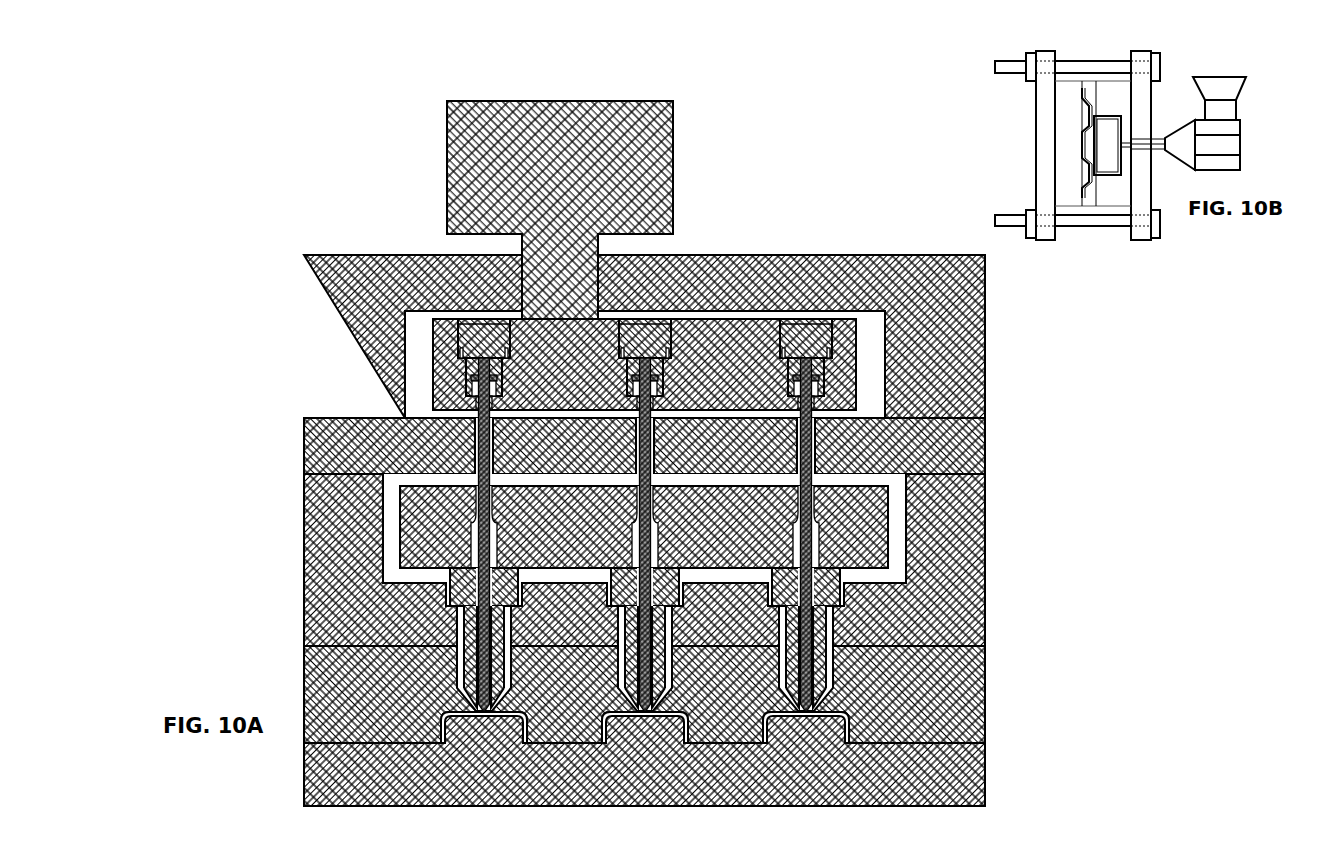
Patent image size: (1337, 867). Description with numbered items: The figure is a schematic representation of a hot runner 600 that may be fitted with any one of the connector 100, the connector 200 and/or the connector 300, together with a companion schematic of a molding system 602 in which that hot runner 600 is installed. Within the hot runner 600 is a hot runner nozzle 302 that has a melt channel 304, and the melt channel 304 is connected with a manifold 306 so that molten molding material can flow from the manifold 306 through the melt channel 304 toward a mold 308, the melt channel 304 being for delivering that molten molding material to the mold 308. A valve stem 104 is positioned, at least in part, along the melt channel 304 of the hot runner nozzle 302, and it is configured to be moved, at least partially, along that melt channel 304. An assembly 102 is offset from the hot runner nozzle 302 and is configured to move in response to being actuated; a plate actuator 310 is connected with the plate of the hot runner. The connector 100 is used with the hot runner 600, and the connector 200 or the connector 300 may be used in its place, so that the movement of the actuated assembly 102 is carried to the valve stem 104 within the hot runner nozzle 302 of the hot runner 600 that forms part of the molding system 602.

In FIG. 10A, the hot runner 600 is at (371, 106).
In FIG. 10B, the hot runner 600 is at (1103, 182).
In FIG. 10B, the molding system 602 is at (1018, 135).
In FIG. 10A, the plate actuator 310 is at (570, 93).
In FIG. 10A, the connector 100 is at (685, 296).
In FIG. 10A, the connector 200 is at (710, 296).
In FIG. 10A, the connector 300 is at (468, 375).
In FIG. 10A, the assembly 102 is at (847, 382).
In FIG. 10A, the valve stem 104 is at (803, 495).
In FIG. 10A, the manifold 306 is at (867, 552).
In FIG. 10A, the melt channel 304 is at (807, 625).
In FIG. 10A, the hot runner nozzle 302 is at (815, 683).
In FIG. 10A, the mold 308 is at (946, 773).